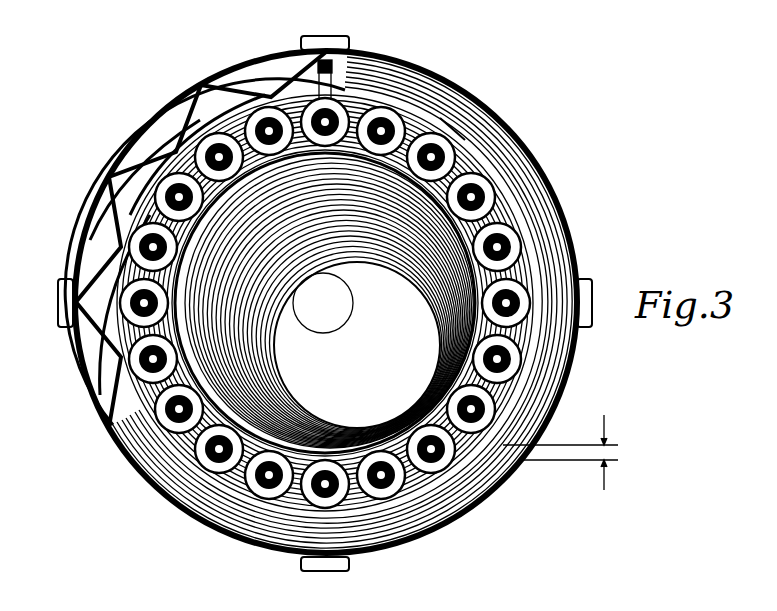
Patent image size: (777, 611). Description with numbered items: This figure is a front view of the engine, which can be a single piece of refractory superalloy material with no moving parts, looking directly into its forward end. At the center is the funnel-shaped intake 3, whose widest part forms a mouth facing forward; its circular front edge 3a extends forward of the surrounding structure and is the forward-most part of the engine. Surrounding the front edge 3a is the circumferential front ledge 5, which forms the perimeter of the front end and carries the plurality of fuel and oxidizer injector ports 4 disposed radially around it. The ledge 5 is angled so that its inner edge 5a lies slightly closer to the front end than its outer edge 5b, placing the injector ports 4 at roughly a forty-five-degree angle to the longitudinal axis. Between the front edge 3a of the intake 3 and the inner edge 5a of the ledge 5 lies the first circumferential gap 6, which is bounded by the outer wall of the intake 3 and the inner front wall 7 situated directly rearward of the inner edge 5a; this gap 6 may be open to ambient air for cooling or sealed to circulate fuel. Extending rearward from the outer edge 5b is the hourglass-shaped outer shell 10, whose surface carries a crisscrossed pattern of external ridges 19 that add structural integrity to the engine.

The funnel-shaped intake 3 is at (510, 127).
The front edge of the intake 3a is at (247, 117).
The fuel and oxidizer injector ports 4 is at (565, 212).
The circumferential front ledge 5 is at (415, 105).
The inner edge of the circumferential front ledge 5a is at (362, 90).
The outer edge of the circumferential front ledge 5b is at (452, 133).
The first circumferential gap 6 is at (560, 461).
The inner front wall 7 is at (117, 365).
The outer shell 10 is at (120, 447).
The external ridges 19 is at (463, 82).